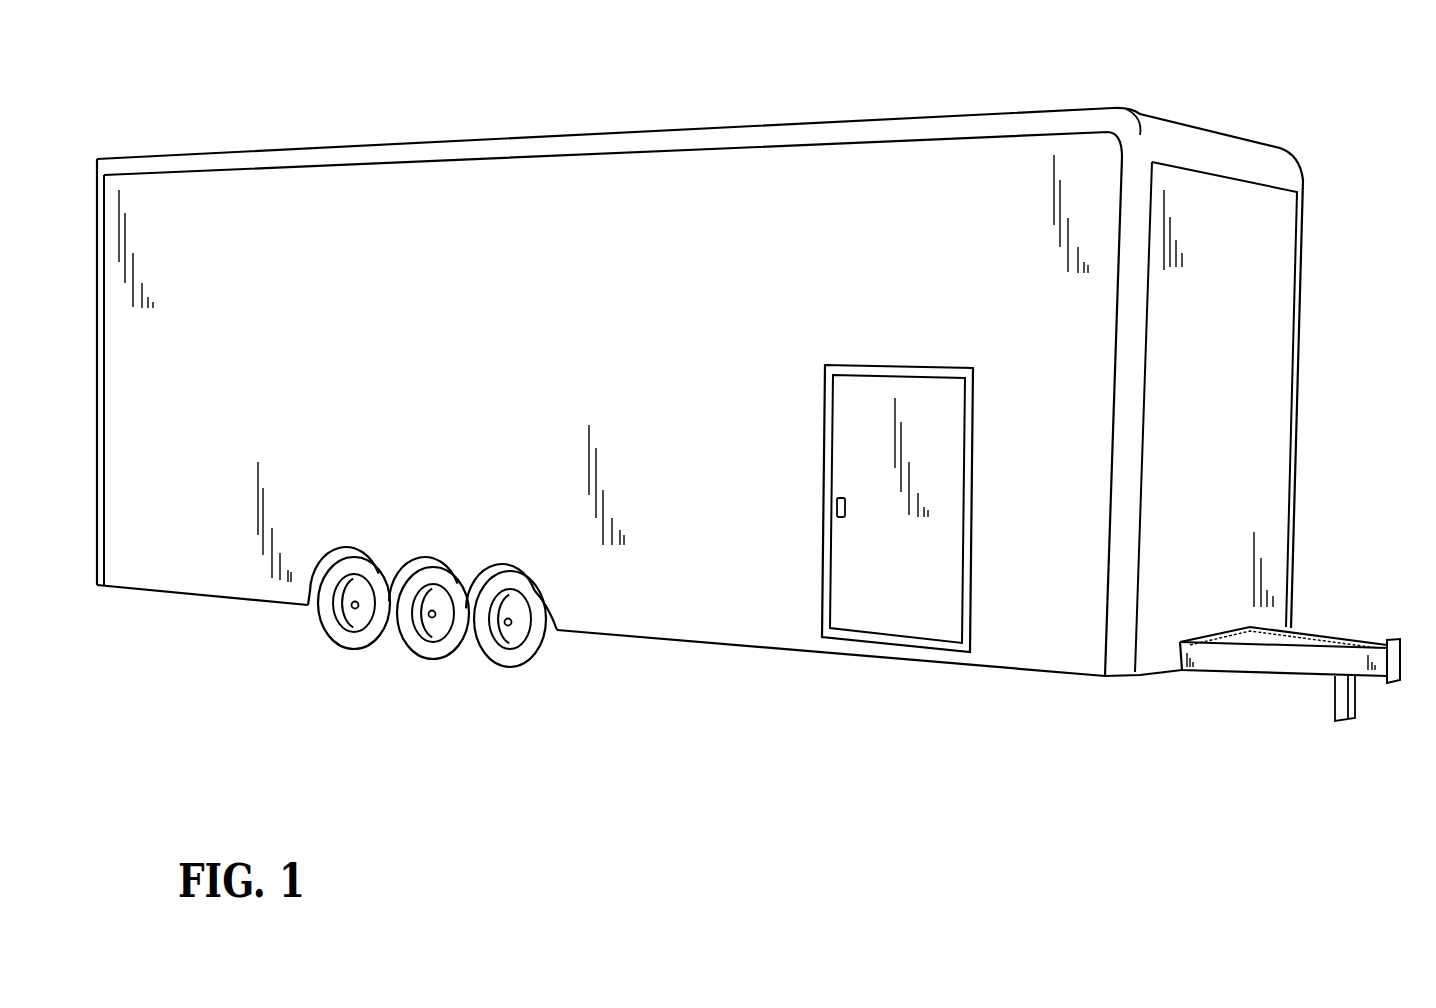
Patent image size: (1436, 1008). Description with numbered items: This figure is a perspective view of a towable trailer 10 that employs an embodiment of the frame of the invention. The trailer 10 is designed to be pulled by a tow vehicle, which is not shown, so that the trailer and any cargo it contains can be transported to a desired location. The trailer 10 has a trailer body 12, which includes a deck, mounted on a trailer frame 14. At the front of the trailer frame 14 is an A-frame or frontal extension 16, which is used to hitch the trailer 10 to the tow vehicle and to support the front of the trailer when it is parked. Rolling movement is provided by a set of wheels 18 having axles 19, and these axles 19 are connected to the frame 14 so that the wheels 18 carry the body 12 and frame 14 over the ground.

The towable trailer 10 is at (1142, 62).
The trailer body 12 is at (762, 122).
The trailer frame 14 is at (1182, 690).
The A-frame or frontal extension 16 is at (1358, 636).
The wheels 18 is at (425, 655).
The axles 19 is at (434, 616).